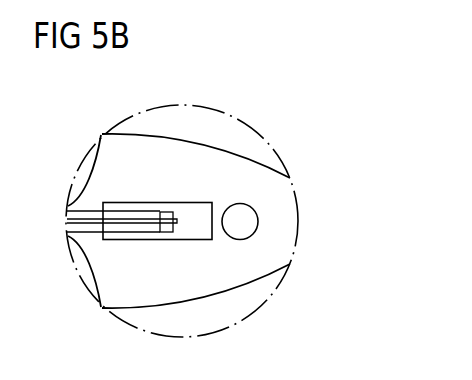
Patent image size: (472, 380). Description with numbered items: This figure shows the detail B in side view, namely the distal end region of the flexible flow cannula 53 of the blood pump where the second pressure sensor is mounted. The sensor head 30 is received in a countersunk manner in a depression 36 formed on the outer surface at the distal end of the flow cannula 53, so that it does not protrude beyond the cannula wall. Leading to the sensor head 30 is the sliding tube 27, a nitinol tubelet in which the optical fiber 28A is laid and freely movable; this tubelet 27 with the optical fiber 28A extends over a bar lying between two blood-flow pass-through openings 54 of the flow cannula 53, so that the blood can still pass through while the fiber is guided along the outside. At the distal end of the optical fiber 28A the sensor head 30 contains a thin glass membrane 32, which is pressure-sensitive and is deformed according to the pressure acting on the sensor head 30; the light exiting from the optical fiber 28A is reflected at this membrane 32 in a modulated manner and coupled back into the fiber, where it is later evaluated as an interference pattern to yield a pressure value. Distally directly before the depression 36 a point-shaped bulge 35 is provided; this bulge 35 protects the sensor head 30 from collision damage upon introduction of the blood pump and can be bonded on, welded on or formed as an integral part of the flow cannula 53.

The detail B is at (280, 158).
The flexible flow cannula 53 is at (213, 119).
The blood-flow pass-through openings 54 is at (81, 176).
The depression 36 is at (193, 213).
The optical fiber 28A is at (92, 211).
The sliding tube 27 is at (94, 233).
The glass membrane 32 is at (177, 223).
The sensor head 30 is at (167, 232).
The point-shaped bulge 35 is at (250, 222).